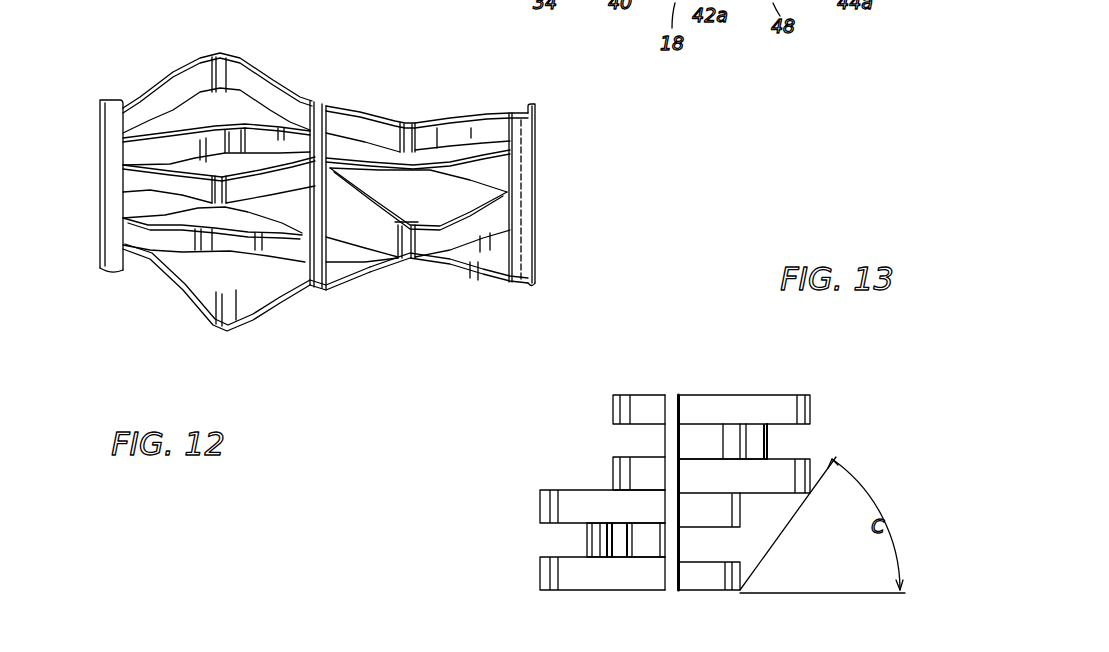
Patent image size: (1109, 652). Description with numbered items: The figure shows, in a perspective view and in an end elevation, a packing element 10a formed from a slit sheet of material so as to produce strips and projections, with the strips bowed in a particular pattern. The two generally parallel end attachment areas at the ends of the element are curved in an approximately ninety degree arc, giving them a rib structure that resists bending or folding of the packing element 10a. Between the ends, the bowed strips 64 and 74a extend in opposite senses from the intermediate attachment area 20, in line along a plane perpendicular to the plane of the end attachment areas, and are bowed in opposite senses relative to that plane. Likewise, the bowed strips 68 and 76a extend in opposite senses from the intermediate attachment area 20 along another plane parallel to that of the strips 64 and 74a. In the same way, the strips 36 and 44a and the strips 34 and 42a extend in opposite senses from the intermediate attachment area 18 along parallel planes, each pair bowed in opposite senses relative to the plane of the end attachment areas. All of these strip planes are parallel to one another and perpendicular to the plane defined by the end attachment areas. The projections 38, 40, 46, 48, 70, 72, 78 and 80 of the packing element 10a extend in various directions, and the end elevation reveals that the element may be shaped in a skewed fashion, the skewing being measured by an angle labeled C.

In FIG. 12, the packing element 10a is at (208, 345).
In FIG. 13, the packing element 10a is at (543, 432).
In FIG. 12, the intermediate attachment area 18 is at (315, 107).
In FIG. 13, the intermediate attachment area 18 is at (767, 443).
In FIG. 12, the intermediate attachment area 20 is at (333, 290).
In FIG. 13, the intermediate attachment area 20 is at (587, 547).
In FIG. 12, the strip 34 is at (197, 57).
In FIG. 13, the strip 34 is at (813, 408).
In FIG. 12, the strip 36 is at (140, 178).
In FIG. 13, the strip 36 is at (617, 464).
In FIG. 12, the projection 38 is at (172, 143).
In FIG. 12, the projection 40 is at (270, 140).
In FIG. 12, the strip 42a is at (377, 127).
In FIG. 13, the strip 42a is at (617, 405).
In FIG. 12, the strip 44a is at (503, 180).
In FIG. 13, the strip 44a is at (793, 473).
In FIG. 12, the projection 46 is at (480, 157).
In FIG. 13, the projection 46 is at (708, 440).
In FIG. 12, the projection 48 is at (352, 147).
In FIG. 13, the projection 48 is at (752, 440).
In FIG. 12, the bowed strip 64 is at (163, 293).
In FIG. 13, the bowed strip 64 is at (540, 575).
In FIG. 12, the bowed strip 68 is at (140, 210).
In FIG. 13, the bowed strip 68 is at (733, 513).
In FIG. 12, the projection 70 is at (153, 242).
In FIG. 12, the projection 72 is at (270, 250).
In FIG. 12, the bowed strip 74a is at (472, 262).
In FIG. 13, the bowed strip 74a is at (712, 580).
In FIG. 12, the bowed strip 76a is at (397, 265).
In FIG. 13, the bowed strip 76a is at (548, 498).
In FIG. 12, the projection 78 is at (503, 235).
In FIG. 13, the projection 78 is at (643, 548).
In FIG. 12, the projection 80 is at (355, 250).
In FIG. 13, the projection 80 is at (590, 540).